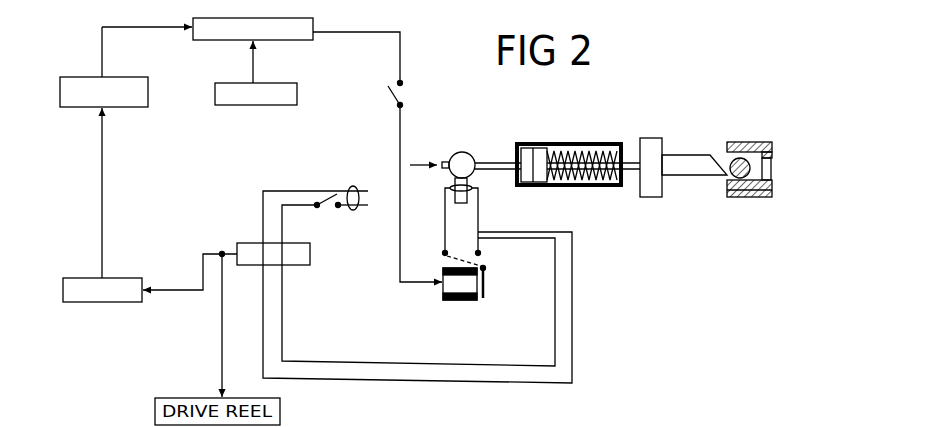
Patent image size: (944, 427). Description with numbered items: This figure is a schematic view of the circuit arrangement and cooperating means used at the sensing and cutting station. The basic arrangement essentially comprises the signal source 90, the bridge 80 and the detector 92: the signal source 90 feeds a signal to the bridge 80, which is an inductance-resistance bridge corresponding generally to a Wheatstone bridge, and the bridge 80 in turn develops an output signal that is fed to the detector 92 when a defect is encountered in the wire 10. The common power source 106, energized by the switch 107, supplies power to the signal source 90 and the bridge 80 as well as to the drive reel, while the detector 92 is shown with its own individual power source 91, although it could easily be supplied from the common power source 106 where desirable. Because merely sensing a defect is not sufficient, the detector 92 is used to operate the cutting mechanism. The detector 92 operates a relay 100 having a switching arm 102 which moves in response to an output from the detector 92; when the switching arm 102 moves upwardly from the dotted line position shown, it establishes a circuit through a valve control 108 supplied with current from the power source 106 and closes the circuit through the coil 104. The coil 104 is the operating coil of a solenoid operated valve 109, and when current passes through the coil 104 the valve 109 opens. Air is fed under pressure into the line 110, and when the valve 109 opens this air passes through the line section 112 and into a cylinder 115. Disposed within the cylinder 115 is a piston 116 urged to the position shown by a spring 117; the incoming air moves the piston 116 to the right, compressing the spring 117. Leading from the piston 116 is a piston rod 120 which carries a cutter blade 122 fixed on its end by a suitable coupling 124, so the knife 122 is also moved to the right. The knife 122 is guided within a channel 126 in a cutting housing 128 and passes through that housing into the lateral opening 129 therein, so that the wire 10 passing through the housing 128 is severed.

The wire 10 is at (733, 156).
The bridge 80 is at (140, 100).
The signal source 90 is at (140, 300).
The power source 91 is at (285, 105).
The detector 92 is at (302, 40).
The relay 100 is at (477, 299).
The switching arm 102 is at (481, 253).
The coil 104 is at (455, 198).
The common power source 106 is at (312, 254).
The switch 107 is at (331, 190).
The valve control 108 is at (482, 137).
The solenoid operated valve 109 is at (463, 151).
The line 110 is at (447, 152).
The line section 112 is at (503, 170).
The cylinder 115 is at (550, 143).
The piston 116 is at (590, 186).
The spring 117 is at (608, 146).
The piston rod 120 is at (637, 176).
The cutter blade 122 is at (700, 175).
The coupling 124 is at (658, 144).
The channel 126 is at (745, 198).
The cutting housing 128 is at (757, 140).
The lateral opening 129 is at (773, 148).